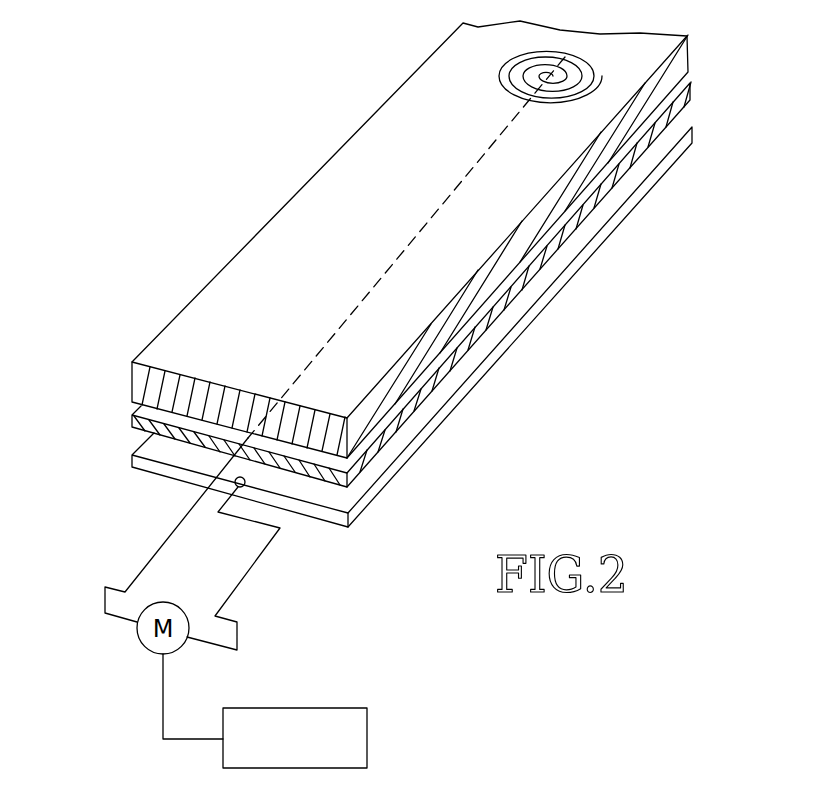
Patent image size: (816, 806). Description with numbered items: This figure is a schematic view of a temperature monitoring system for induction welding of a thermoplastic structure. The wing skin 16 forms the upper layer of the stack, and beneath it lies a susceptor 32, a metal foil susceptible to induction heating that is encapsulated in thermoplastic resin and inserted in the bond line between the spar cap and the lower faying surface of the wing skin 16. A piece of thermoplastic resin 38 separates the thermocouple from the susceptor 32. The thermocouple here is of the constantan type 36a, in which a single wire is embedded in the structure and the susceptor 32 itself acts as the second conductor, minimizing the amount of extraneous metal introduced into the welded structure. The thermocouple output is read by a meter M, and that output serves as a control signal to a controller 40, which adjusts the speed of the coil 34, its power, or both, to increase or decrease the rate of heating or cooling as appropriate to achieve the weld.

The wing skin 16 is at (84, 406).
The coil 34 is at (483, 70).
The constantan type thermocouple 36a is at (380, 278).
The piece of thermoplastic resin 38 is at (480, 356).
The susceptor 32 is at (425, 452).
The controller 40 is at (367, 738).